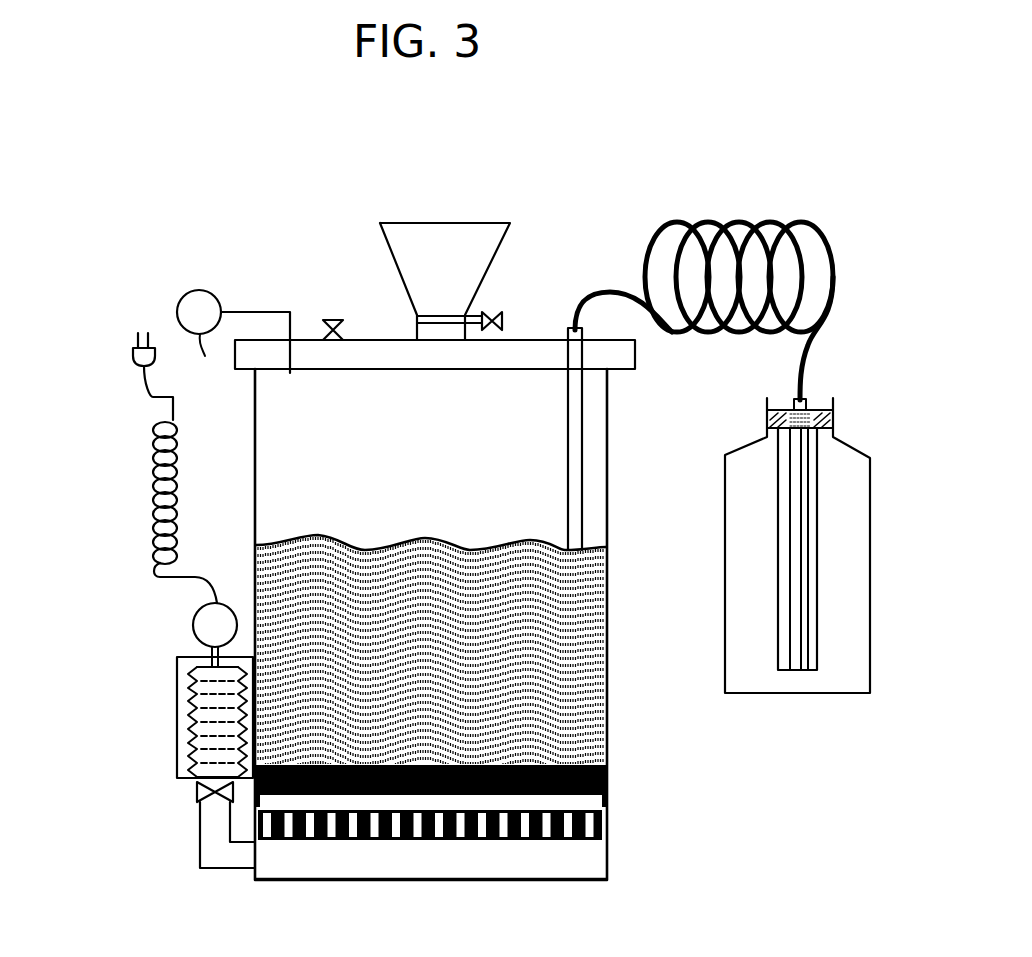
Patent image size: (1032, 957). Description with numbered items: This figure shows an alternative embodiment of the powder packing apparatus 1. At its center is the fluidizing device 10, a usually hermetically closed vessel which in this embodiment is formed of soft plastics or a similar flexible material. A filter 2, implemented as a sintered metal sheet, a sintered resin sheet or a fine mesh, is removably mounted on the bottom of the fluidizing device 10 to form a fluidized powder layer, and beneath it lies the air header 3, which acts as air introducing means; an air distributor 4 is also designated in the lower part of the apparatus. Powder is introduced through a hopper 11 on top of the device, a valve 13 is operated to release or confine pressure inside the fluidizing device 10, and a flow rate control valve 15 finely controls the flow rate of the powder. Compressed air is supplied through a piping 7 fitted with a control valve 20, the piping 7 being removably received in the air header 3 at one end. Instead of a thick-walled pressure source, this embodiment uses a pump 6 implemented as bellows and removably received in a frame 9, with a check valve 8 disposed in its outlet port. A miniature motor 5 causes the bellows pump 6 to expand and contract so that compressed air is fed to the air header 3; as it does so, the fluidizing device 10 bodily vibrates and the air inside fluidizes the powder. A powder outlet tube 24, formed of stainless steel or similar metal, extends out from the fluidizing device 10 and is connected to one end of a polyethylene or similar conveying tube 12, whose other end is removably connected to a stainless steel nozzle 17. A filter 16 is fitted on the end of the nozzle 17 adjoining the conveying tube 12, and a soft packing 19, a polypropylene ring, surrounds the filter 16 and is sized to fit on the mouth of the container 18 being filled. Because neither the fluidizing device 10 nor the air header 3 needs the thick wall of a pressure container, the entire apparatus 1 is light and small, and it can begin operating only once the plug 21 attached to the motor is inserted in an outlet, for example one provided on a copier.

The powder packing apparatus 1 is at (234, 218).
The filter 2 is at (606, 788).
The air header 3 is at (400, 858).
The air distributor 4 is at (490, 830).
The miniature motor 5 is at (200, 625).
The pump 6 is at (225, 742).
The piping 7 is at (210, 845).
The check valve 8 is at (198, 793).
The frame 9 is at (177, 665).
The fluidizing device 10 is at (255, 493).
The hopper 11 is at (462, 240).
The conveying tube 12 is at (838, 273).
The valve 13 is at (330, 303).
The flow rate control valve 15 is at (493, 300).
The filter 16 is at (812, 408).
The nozzle 17 is at (818, 487).
The container 18 is at (740, 641).
The soft packing 19 is at (777, 430).
The control valve 20 is at (240, 835).
The plug 21 is at (133, 357).
The powder outlet tube 24 is at (583, 395).